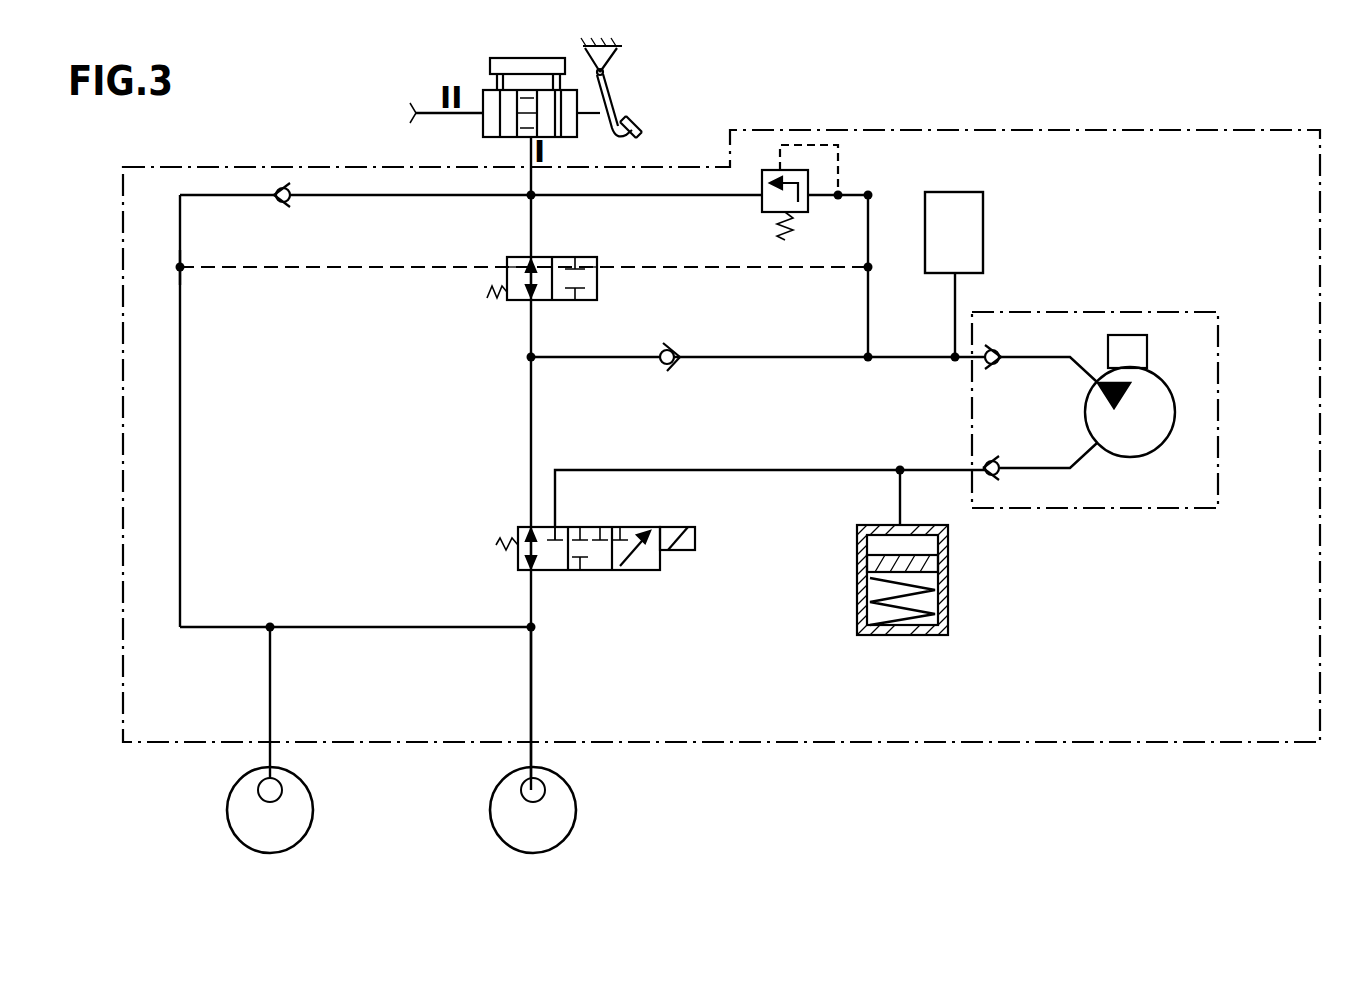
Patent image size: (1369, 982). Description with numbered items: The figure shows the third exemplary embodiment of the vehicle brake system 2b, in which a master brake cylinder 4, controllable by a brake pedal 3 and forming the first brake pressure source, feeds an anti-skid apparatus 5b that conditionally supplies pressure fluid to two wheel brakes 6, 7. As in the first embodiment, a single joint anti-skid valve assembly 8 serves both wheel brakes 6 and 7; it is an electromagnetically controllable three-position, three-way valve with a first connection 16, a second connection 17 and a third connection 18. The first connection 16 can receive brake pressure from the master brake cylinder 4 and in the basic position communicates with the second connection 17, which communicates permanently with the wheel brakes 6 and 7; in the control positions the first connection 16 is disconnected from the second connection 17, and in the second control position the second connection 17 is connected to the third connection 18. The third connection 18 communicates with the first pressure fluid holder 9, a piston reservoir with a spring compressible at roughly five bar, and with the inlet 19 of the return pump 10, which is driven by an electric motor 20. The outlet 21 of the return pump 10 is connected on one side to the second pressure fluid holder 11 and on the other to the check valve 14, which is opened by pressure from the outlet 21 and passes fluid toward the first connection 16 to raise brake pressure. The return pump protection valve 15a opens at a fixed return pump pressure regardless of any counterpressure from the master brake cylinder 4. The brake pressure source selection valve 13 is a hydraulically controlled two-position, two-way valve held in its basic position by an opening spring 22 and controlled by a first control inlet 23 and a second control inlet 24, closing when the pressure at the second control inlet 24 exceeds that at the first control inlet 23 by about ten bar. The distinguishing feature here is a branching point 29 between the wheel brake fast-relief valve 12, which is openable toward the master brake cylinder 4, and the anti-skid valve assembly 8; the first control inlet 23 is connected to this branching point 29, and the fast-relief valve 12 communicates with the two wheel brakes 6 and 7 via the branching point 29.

The vehicle brake system 2b is at (1165, 130).
The brake pedal 3 is at (634, 130).
The master brake cylinder 4 is at (490, 125).
The anti-skid apparatus 5b is at (126, 357).
The wheel brake 6 is at (282, 790).
The wheel brake 7 is at (545, 790).
The anti-skid valve assembly 8 is at (560, 572).
The first pressure fluid holder 9 is at (948, 562).
The return pump 10 is at (1104, 312).
The second pressure fluid holder 11 is at (980, 214).
The wheel brake fast-relief valve 12 is at (290, 203).
The brake pressure source selection valve 13 is at (545, 300).
The check valve 14 is at (664, 365).
The return pump protection valve 15a is at (762, 205).
The first connection 16 is at (521, 526).
The second connection 17 is at (522, 572).
The third connection 18 is at (556, 526).
The inlet 19 is at (978, 462).
The electric motor 20 is at (1135, 352).
The outlet 21 is at (983, 352).
The opening spring 22 is at (488, 296).
The first control inlet 23 is at (507, 262).
The second control inlet 24 is at (597, 262).
The branching point 29 is at (183, 270).